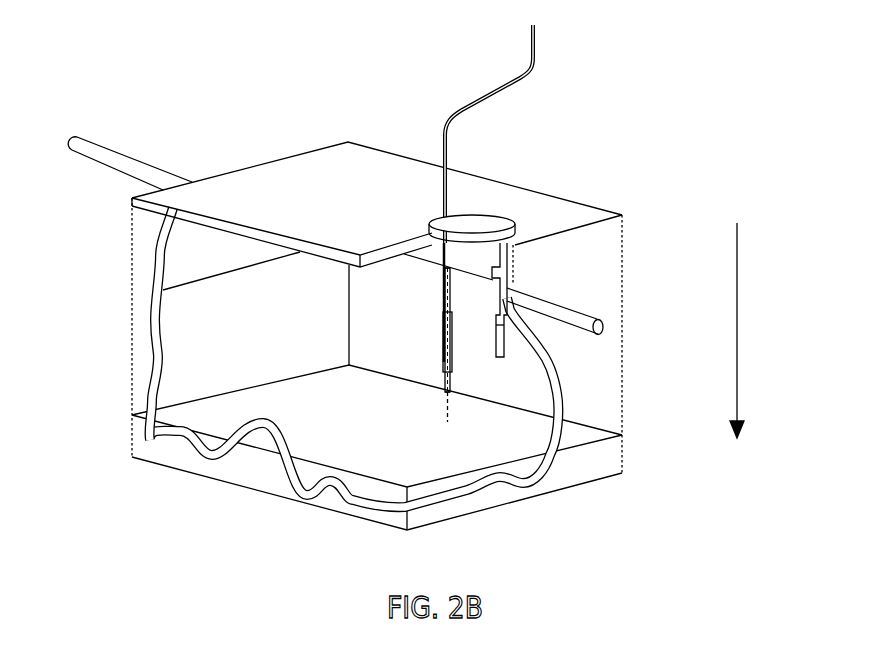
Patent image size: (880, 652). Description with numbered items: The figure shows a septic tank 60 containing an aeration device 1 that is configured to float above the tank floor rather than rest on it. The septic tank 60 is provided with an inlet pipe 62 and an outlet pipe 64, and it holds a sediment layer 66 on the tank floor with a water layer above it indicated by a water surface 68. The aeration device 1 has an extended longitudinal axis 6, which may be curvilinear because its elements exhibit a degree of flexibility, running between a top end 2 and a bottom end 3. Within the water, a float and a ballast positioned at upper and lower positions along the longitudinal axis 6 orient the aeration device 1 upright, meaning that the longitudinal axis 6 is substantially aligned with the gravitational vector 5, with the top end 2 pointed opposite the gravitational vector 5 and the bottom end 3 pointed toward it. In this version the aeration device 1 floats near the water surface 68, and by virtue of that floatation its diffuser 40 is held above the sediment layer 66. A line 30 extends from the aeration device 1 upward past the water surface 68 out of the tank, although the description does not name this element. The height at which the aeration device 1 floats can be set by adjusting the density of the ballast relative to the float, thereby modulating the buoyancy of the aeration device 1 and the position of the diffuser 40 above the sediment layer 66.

The aeration device 1 is at (445, 303).
The top end 2 is at (448, 268).
The bottom end 3 is at (447, 392).
The gravitational vector 5 is at (738, 315).
The longitudinal axis 6 is at (443, 403).
The cable 30 is at (475, 105).
The diffuser 40 is at (450, 347).
The septic tank 60 is at (288, 165).
The inlet pipe 62 is at (108, 165).
The outlet pipe 64 is at (570, 305).
The sediment layer 66 is at (217, 425).
The water surface 68 is at (220, 277).